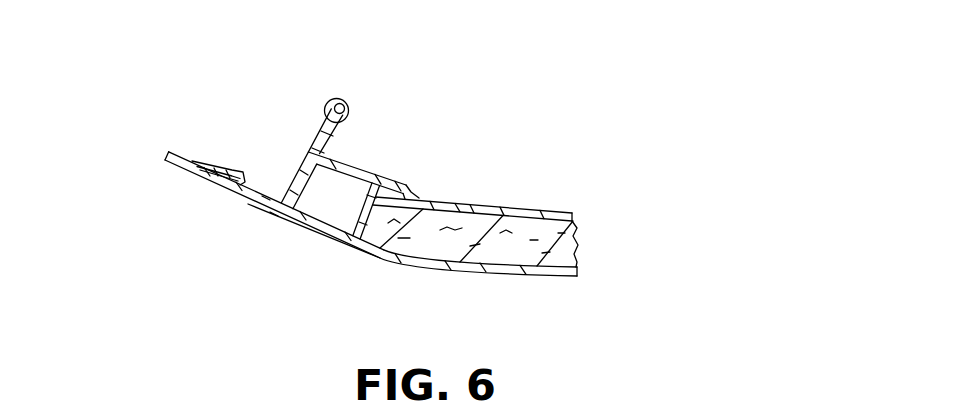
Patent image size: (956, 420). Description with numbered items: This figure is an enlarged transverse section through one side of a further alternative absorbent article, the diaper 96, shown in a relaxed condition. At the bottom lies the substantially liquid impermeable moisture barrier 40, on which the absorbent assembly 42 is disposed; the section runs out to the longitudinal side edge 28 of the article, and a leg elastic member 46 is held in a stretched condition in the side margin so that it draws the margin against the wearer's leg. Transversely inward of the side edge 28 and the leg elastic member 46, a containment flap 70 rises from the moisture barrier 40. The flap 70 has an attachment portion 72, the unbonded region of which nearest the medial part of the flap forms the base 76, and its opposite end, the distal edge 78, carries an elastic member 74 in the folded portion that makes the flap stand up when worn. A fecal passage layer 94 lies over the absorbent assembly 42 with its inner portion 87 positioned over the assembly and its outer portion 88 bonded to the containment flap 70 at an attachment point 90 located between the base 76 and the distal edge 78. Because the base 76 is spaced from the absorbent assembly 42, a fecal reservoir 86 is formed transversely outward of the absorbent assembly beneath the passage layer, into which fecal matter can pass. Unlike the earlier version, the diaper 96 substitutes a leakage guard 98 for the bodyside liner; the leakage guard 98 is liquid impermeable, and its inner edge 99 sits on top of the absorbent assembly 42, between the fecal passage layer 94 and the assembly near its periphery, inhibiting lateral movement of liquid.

The longitudinal side edge 28 is at (165, 155).
The moisture barrier 40 is at (548, 277).
The absorbent assembly 42 is at (570, 243).
The leg elastic member 46 is at (200, 170).
The containment flap 70 is at (305, 110).
The attachment portion 72 is at (276, 213).
The elastic member 74 is at (350, 108).
The base 76 is at (275, 200).
The distal edge 78 is at (330, 100).
The fecal reservoir 86 is at (330, 205).
The inner portion 87 is at (548, 203).
The outer portion 88 is at (327, 173).
The attachment point 90 is at (312, 148).
The fecal passage layer 94 is at (467, 201).
The diaper 96 is at (535, 158).
The leakage guard 98 is at (241, 172).
The inner edge 99 is at (398, 185).